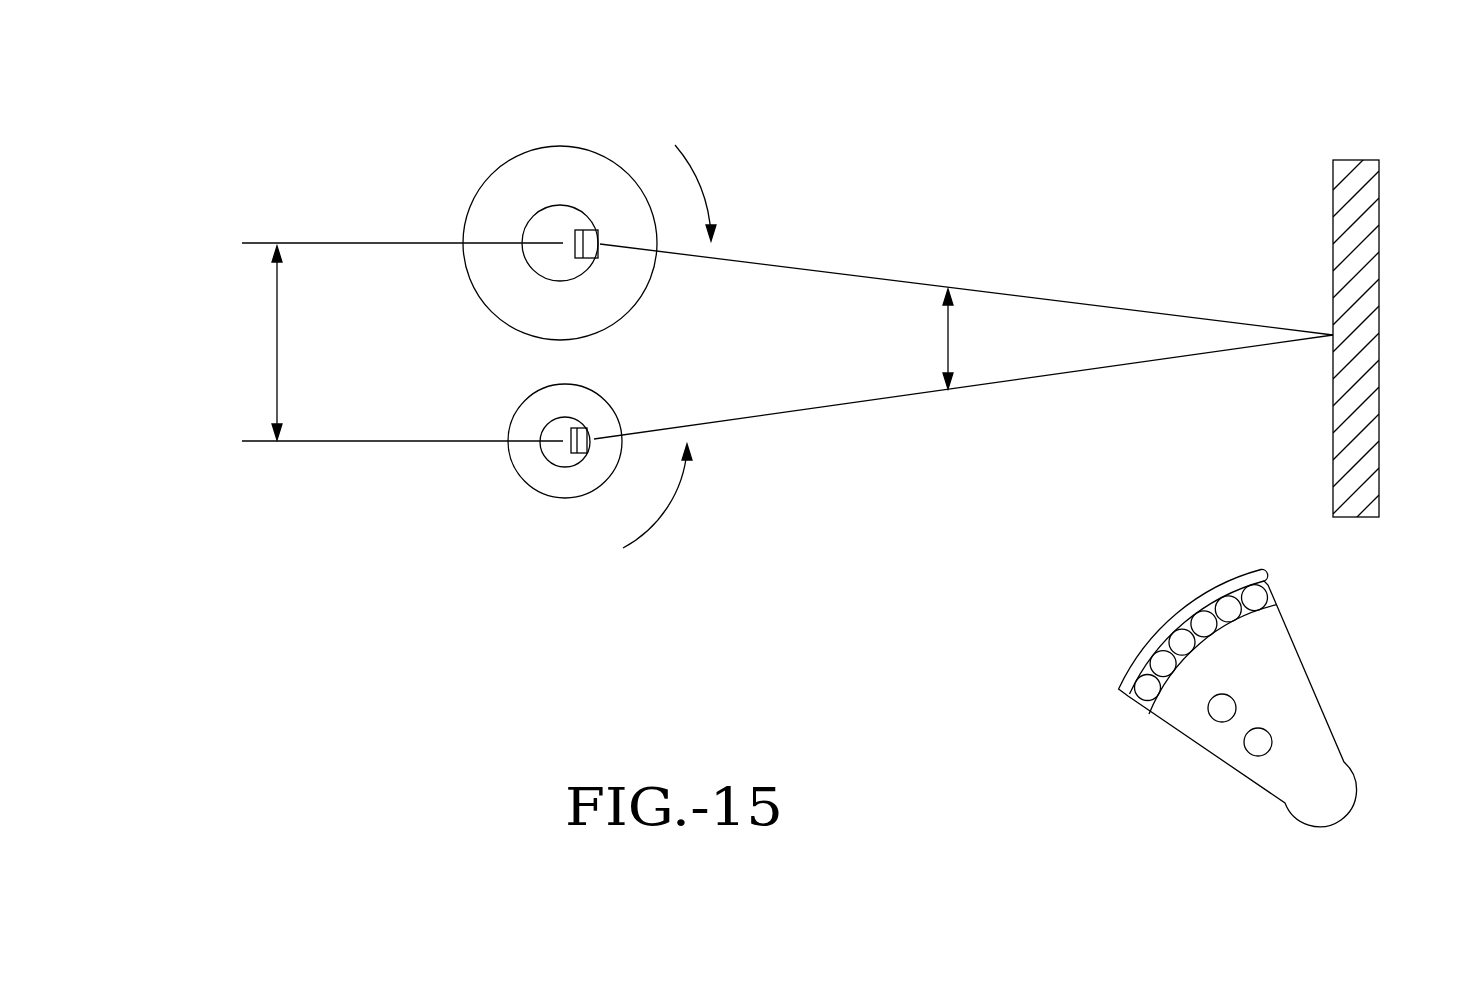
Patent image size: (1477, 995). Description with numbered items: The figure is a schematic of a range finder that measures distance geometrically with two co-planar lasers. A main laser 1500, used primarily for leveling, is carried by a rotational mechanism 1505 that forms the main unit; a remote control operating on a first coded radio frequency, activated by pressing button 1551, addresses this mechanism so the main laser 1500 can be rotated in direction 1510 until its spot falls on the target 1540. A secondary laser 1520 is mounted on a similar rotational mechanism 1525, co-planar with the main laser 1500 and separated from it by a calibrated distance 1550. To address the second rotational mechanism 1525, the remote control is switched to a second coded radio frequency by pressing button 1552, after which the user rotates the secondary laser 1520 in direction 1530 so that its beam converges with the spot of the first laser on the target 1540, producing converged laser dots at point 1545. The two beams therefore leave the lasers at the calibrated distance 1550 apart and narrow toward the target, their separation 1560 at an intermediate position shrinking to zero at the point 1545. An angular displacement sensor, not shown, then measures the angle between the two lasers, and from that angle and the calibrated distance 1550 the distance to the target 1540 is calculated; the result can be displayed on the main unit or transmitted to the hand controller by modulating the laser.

The main laser 1500 is at (593, 258).
The rotational mechanism 1505 is at (520, 160).
The direction of rotation of the main laser 1510 is at (703, 187).
The secondary laser 1520 is at (586, 430).
The rotational mechanism 1525 is at (547, 496).
The direction of rotation of the secondary laser 1530 is at (668, 508).
The target 1540 is at (1360, 160).
The point of converged laser dots 1545 is at (1331, 333).
The calibrated distance 1550 is at (277, 349).
The button 1551 is at (1210, 722).
The button 1552 is at (1248, 756).
The beam separation 1560 is at (948, 345).